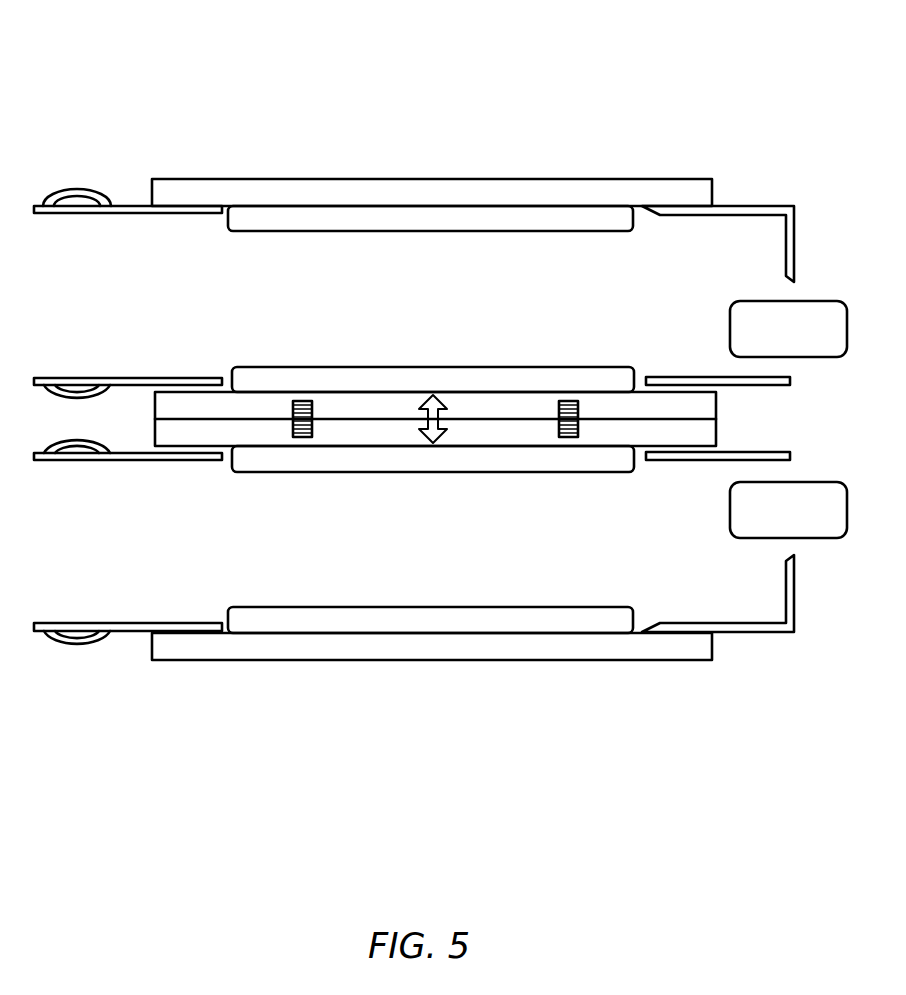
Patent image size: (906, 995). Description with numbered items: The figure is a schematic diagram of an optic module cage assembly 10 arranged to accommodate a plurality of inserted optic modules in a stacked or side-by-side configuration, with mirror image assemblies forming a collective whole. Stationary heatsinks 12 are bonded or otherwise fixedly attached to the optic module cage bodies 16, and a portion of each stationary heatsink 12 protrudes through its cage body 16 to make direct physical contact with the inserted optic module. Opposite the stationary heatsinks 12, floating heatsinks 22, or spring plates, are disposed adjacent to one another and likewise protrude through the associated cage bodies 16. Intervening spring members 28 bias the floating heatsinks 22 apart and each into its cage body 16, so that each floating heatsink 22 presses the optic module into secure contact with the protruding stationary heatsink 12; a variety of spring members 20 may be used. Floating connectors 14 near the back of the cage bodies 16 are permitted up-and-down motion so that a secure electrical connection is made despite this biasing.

The optic module cage assembly 10 is at (442, 130).
The stationary heatsink 12 is at (591, 178).
The floating connector 14 is at (806, 300).
The optic module cage body 16 is at (754, 206).
The spring member 20 is at (85, 193).
The floating heatsink 22 is at (613, 367).
The spring member 28 is at (318, 404).